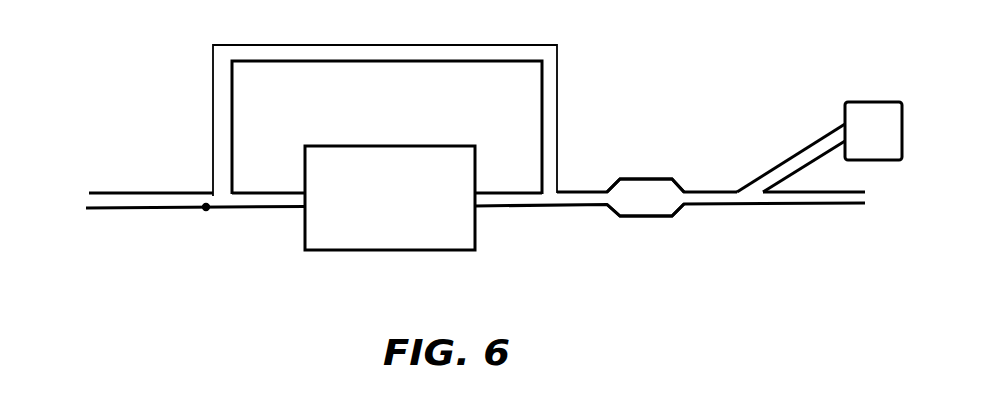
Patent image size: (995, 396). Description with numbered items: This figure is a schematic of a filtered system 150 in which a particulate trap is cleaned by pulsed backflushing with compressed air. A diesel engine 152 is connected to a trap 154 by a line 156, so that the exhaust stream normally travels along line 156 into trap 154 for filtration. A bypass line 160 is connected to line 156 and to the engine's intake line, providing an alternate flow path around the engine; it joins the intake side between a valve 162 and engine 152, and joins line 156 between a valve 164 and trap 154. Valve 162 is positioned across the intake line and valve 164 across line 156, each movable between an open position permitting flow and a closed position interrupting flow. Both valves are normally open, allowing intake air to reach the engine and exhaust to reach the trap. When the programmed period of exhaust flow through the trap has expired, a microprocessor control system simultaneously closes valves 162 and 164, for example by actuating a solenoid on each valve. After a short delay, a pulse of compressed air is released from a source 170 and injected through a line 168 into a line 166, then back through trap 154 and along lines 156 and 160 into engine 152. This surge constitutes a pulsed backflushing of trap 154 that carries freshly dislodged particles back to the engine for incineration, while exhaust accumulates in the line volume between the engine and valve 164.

The filtered system 150 is at (452, 24).
The diesel engine 152 is at (368, 250).
The trap 154 is at (650, 178).
The line 156 is at (583, 207).
The line 160 is at (367, 45).
The valve 162 is at (206, 204).
The valve 164 is at (532, 202).
The line 166 is at (822, 197).
The line 168 is at (787, 160).
The source 170 is at (870, 108).